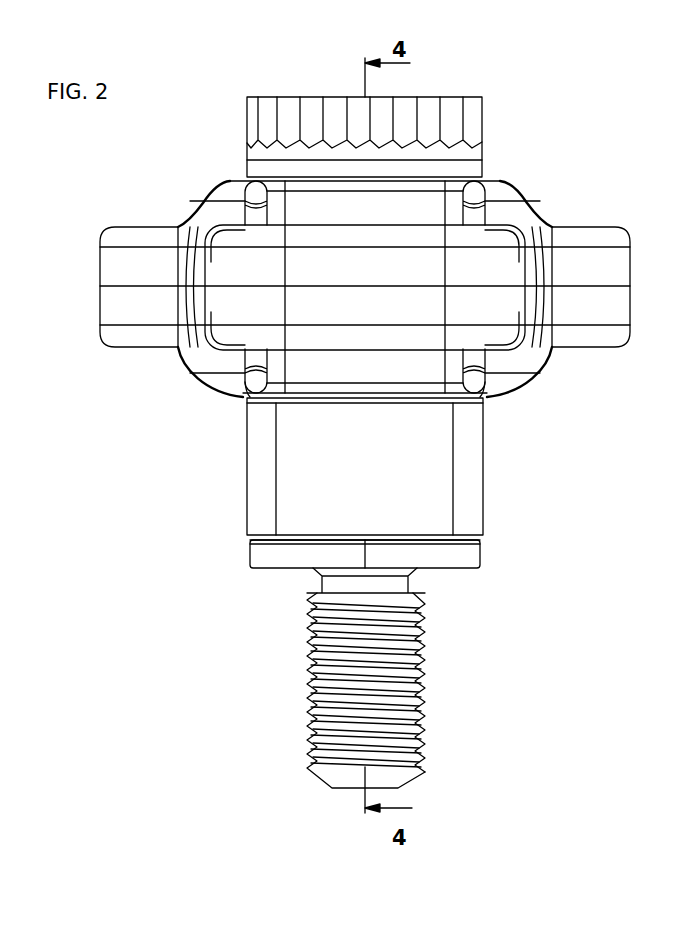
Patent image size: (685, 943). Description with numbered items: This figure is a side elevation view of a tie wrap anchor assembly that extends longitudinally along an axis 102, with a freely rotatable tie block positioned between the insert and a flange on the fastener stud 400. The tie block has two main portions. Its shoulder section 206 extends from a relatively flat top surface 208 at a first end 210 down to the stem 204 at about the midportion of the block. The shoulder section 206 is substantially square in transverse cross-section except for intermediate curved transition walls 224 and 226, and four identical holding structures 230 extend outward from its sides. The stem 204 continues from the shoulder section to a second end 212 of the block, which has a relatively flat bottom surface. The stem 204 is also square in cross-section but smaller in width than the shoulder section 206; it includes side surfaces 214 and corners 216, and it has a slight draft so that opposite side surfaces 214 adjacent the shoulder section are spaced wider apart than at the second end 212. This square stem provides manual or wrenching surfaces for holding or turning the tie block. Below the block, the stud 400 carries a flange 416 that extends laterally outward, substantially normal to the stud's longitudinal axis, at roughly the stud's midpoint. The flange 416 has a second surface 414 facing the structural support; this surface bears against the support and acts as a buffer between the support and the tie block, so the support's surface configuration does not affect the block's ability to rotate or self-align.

The axis 102 is at (363, 87).
The first end 210 is at (222, 163).
The shoulder section 206 is at (531, 173).
The top surface 208 is at (492, 178).
The holding structures 230 is at (520, 210).
The curved transition wall 226 is at (320, 187).
The curved transition wall 224 is at (255, 400).
The stem 204 is at (516, 475).
The side surfaces 214 is at (245, 455).
The corners 216 is at (262, 483).
The second end 212 is at (236, 543).
The flange 416 is at (241, 571).
The second surface 414 is at (460, 573).
The stud 400 is at (282, 697).